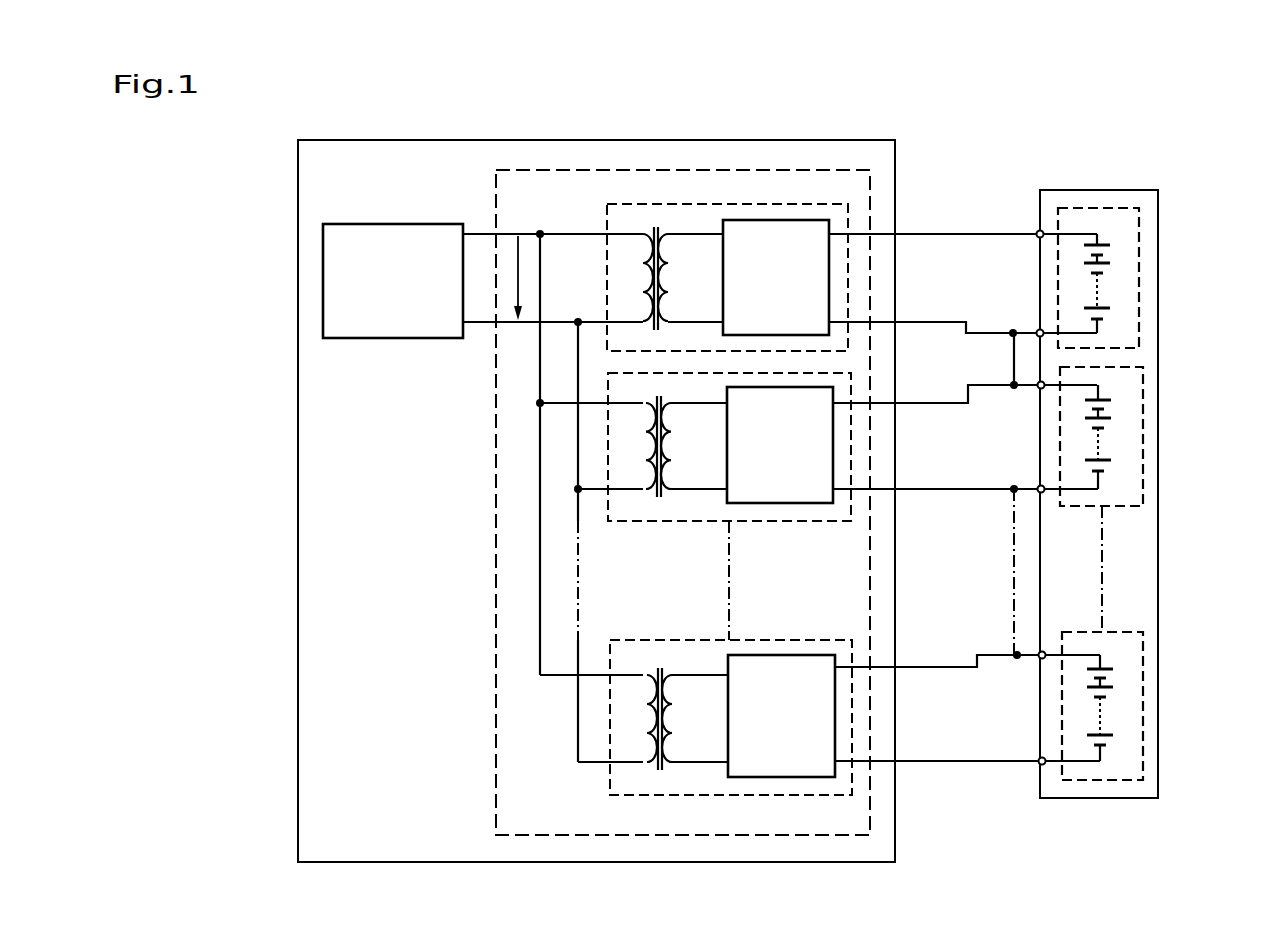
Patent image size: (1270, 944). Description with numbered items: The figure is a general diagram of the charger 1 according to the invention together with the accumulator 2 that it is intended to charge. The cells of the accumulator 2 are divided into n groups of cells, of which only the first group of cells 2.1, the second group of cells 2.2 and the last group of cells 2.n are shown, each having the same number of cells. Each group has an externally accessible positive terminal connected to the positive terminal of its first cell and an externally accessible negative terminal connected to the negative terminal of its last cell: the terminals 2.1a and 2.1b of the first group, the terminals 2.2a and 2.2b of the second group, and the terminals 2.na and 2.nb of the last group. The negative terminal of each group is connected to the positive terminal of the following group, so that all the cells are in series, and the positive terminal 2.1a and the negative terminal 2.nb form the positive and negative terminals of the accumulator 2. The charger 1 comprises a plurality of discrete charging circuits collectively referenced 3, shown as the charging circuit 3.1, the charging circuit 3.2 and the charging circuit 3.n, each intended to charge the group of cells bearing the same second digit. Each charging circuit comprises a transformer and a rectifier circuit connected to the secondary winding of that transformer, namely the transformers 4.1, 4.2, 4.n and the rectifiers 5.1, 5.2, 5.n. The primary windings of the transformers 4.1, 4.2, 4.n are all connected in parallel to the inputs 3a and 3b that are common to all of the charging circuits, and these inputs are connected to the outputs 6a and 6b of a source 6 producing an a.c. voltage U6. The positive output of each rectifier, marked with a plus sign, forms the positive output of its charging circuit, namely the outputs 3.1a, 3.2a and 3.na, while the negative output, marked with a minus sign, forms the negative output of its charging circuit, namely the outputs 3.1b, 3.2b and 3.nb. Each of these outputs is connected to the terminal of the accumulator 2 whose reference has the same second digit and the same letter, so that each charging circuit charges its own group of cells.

The charger 1 is at (310, 572).
The accumulator 2 is at (1148, 355).
The first group of cells 2.1 is at (1123, 214).
The second group of cells 2.2 is at (1133, 440).
The last group of cells 2.n is at (1133, 685).
The positive terminal of first group of cells 2.1a is at (1037, 232).
The negative terminal of first group of cells 2.1b is at (1037, 331).
The positive terminal of second group of cells 2.2a is at (1039, 388).
The negative terminal of second group of cells 2.2b is at (1038, 487).
The positive terminal of last group of cells 2.na is at (1040, 658).
The negative terminal of last group of cells 2.nb is at (1039, 760).
The charging circuits 3 is at (503, 678).
The first common input 3a is at (497, 234).
The second common input 3b is at (496, 324).
The first charging circuit 3.1 is at (646, 212).
The second charging circuit 3.2 is at (621, 517).
The n-th charging circuit 3.n is at (622, 645).
The positive output of first charging circuit 3.1a is at (852, 233).
The negative output of first charging circuit 3.1b is at (853, 322).
The positive output of second charging circuit 3.2a is at (853, 403).
The negative output of second charging circuit 3.2b is at (853, 489).
The positive output of n-th charging circuit 3.na is at (853, 667).
The negative output of n-th charging circuit 3.nb is at (853, 761).
The transformer 4.1 is at (662, 222).
The transformer 4.2 is at (659, 388).
The transformer 4.n is at (662, 662).
The rectifier circuit 5.1 is at (771, 233).
The rectifier circuit 5.2 is at (777, 504).
The rectifier circuit 5.n is at (765, 660).
The a.c. voltage source 6 is at (340, 338).
The first output of source 6a is at (466, 234).
The second output of source 6b is at (464, 330).
The a.c. voltage U6 is at (519, 278).